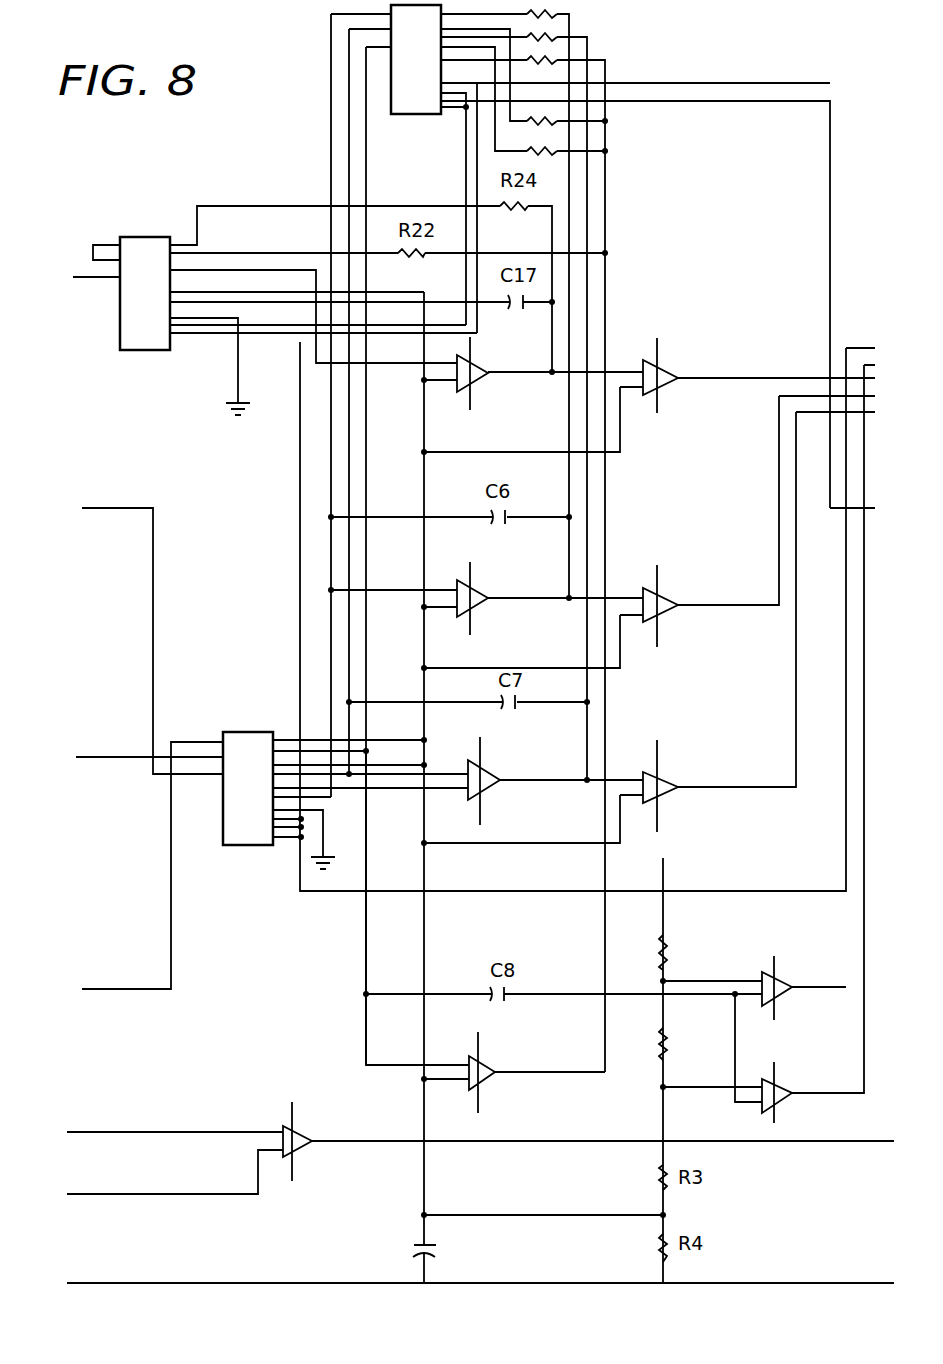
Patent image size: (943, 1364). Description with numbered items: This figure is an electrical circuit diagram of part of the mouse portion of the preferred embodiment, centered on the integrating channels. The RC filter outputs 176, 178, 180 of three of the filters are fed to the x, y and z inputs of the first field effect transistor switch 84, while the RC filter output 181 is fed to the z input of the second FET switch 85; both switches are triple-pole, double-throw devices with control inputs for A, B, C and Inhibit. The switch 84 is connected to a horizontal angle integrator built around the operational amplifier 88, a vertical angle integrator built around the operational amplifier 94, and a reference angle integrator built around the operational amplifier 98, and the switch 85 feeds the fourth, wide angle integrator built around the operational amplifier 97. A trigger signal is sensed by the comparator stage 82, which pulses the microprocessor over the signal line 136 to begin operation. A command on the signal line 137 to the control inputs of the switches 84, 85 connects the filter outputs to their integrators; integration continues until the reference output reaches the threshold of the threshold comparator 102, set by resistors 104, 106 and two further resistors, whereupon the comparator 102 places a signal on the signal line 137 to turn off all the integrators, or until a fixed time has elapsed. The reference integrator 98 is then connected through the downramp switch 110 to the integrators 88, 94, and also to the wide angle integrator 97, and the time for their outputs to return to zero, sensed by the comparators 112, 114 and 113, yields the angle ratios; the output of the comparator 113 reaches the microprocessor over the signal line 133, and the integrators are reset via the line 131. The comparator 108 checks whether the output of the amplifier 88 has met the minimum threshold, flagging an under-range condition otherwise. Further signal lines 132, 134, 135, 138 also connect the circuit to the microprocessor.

The comparator stage 82 is at (305, 1152).
The first field effect transistor switch 84 is at (131, 293).
The second field effect transistor switch 85 is at (248, 788).
The operational amplifier 88 is at (478, 604).
The operational amplifier 94 is at (490, 786).
The operational amplifier 97 is at (480, 381).
The operational amplifier 98 is at (490, 1085).
The threshold comparator 102 is at (782, 962).
The resistor 104 is at (672, 957).
The resistor 106 is at (666, 1040).
The comparator 108 is at (790, 1103).
The downramp switch 110 is at (416, 59).
The comparator 112 is at (660, 592).
The comparator 113 is at (665, 358).
The comparator 114 is at (665, 773).
The line 131 is at (830, 192).
The signal line 132 is at (695, 83).
The signal line 133 is at (748, 378).
The signal line 134 is at (730, 605).
The signal line 135 is at (796, 673).
The signal line 136 is at (527, 1143).
The signal line 137 is at (846, 648).
The signal line 138 is at (864, 812).
The RC filter output 176 is at (117, 990).
The RC filter output 178 is at (104, 757).
The RC filter output 180 is at (153, 650).
The RC filter output 181 is at (99, 278).